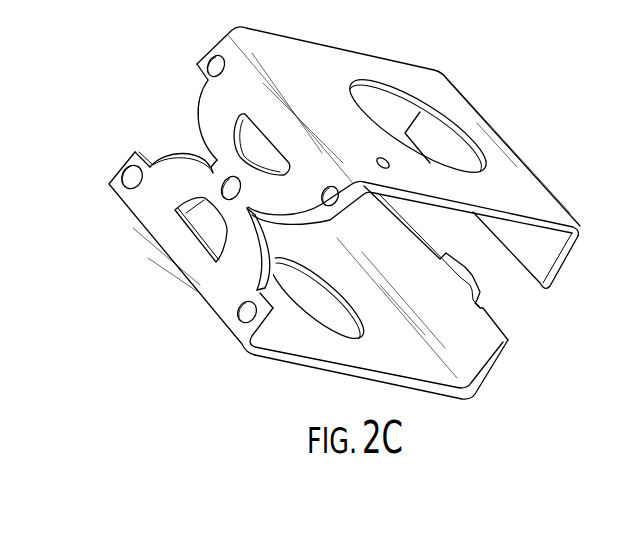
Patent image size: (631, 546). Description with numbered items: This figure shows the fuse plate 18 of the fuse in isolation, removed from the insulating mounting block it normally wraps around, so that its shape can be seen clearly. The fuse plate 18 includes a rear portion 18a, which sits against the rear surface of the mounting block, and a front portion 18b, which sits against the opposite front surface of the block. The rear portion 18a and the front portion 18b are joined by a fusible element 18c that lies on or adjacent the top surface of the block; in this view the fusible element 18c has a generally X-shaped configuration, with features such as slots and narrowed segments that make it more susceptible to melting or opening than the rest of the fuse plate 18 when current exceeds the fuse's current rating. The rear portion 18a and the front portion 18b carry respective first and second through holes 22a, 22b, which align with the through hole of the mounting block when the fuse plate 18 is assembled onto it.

The fuse plate 18 is at (160, 89).
The rear portion 18a is at (507, 180).
The front portion 18b is at (413, 363).
The fusible element 18c is at (172, 182).
The first through hole 22a is at (449, 123).
The second through hole 22b is at (297, 318).